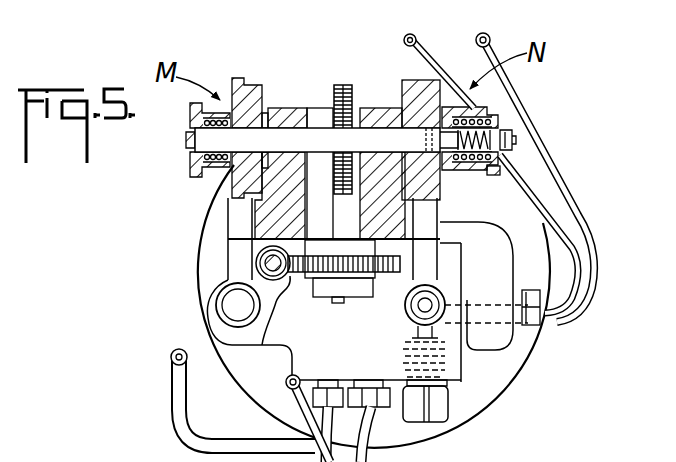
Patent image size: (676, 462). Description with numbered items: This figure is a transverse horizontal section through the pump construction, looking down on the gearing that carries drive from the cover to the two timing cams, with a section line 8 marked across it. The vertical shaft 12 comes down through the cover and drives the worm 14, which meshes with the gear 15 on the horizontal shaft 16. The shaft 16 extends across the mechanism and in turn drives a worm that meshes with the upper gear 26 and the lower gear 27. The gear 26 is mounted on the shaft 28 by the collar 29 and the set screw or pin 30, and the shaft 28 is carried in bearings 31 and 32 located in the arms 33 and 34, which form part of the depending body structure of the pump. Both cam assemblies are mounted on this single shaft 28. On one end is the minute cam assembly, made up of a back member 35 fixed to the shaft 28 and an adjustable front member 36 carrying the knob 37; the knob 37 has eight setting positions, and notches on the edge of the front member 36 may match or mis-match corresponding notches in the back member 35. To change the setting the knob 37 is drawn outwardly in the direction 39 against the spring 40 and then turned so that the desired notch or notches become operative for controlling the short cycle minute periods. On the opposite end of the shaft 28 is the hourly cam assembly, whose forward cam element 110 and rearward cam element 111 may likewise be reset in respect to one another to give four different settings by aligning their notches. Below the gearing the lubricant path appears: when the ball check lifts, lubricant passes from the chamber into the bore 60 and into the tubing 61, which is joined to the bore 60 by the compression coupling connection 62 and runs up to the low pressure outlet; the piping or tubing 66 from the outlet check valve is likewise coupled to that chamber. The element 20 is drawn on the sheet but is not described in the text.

The section line 8 is at (383, 284).
The shaft 12 is at (256, 262).
The worm 14 is at (260, 267).
The gear 15 is at (307, 282).
The horizontal shaft 16 is at (338, 305).
The end cap 20 is at (192, 158).
The upper gear 26 is at (342, 86).
The lower gear 27 is at (195, 175).
The shaft 28 is at (386, 108).
The collar 29 is at (182, 122).
The set screw or pin 30 is at (323, 143).
The bearing 31 is at (275, 105).
The bearing 32 is at (378, 128).
The arm 33 is at (282, 107).
The arm 34 is at (363, 107).
The back member 35 is at (425, 207).
The adjustable front member 36 is at (440, 190).
The knob 37 is at (497, 104).
The direction 39 is at (547, 137).
The spring 40 is at (507, 168).
The bore 60 is at (507, 300).
The tubing 61 is at (424, 57).
The compression coupling connection 62 is at (533, 327).
The piping or tubing 66 is at (490, 60).
The forward cam element 110 is at (242, 78).
The rearward cam element 111 is at (250, 77).